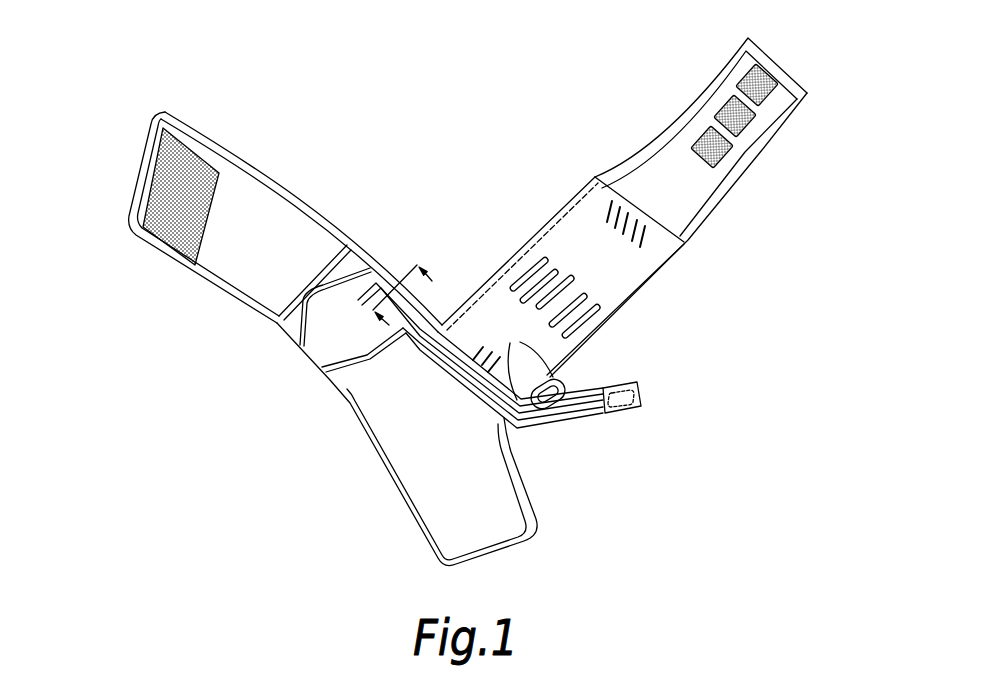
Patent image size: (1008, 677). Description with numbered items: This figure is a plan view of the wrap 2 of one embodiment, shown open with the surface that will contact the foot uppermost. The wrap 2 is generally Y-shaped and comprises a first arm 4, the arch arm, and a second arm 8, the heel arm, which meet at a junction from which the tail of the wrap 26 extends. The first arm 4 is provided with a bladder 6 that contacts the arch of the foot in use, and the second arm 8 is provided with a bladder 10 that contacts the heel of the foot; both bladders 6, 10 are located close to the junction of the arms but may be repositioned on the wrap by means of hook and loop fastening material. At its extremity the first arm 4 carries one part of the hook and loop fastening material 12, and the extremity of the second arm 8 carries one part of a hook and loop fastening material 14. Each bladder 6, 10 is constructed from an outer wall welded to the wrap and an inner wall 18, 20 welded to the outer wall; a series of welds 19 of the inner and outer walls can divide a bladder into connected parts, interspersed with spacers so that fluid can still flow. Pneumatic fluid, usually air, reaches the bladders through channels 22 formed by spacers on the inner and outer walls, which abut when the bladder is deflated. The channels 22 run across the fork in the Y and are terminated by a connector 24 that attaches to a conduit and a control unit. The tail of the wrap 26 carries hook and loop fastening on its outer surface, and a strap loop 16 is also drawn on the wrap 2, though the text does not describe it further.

The wrap 2 is at (567, 473).
The first arm 4 is at (173, 267).
The bladder 6 is at (323, 336).
The second arm 8 is at (767, 137).
The bladder 10 is at (587, 265).
The hook and loop fastening material 12 is at (178, 190).
The hook and loop fastening material 14 is at (770, 80).
The loop strap 16 is at (370, 440).
The inner wall 18 is at (648, 270).
The welds 19 is at (537, 252).
The inner wall 20 is at (345, 246).
The channels 22 is at (570, 423).
The connector 24 is at (641, 398).
The tail of the wrap 26 is at (494, 522).